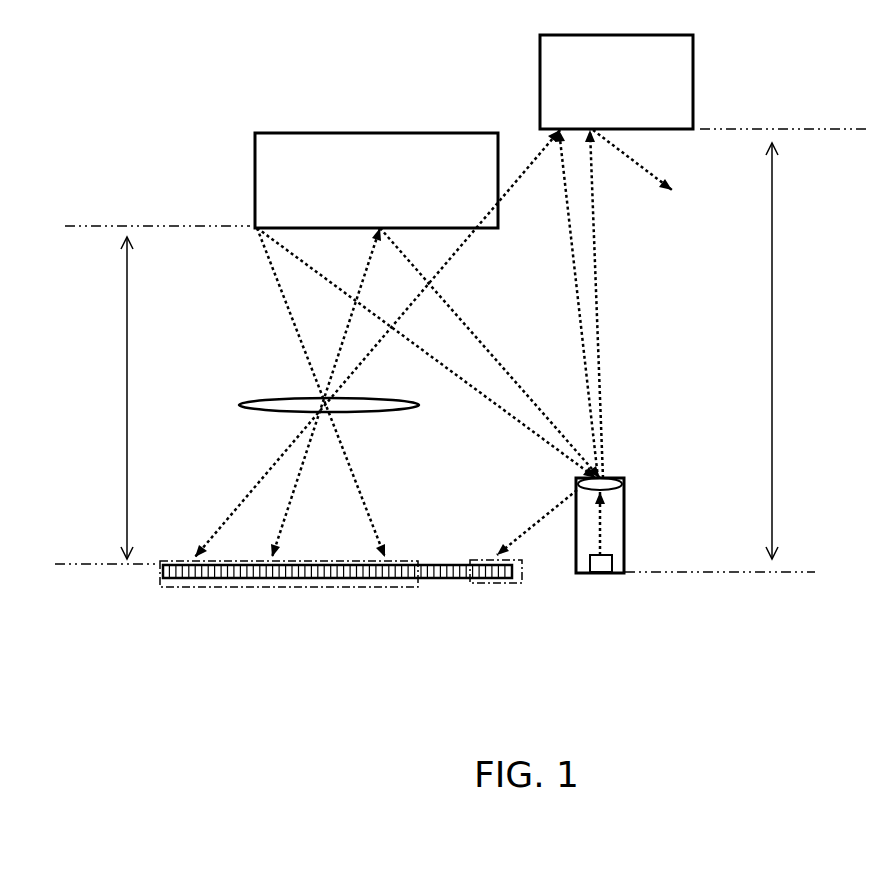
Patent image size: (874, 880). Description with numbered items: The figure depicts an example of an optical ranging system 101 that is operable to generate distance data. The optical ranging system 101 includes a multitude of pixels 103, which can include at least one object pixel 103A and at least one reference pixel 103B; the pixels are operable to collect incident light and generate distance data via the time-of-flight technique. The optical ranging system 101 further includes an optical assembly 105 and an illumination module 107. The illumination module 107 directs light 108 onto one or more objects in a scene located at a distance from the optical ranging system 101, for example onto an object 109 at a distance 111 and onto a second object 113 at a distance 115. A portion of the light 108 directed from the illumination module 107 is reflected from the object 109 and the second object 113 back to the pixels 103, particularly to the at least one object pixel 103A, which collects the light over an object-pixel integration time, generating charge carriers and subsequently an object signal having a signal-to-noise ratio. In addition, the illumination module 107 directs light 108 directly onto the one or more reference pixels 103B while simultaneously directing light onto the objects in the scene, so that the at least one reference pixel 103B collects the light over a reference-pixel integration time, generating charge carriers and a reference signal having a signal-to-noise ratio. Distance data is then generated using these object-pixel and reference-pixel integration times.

The optical ranging system 101 is at (132, 188).
The pixels 103 is at (163, 613).
The object pixel 103A is at (297, 588).
The reference pixel 103B is at (483, 587).
The optical assembly 105 is at (247, 402).
The illumination module 107 is at (638, 563).
The light 108 is at (606, 366).
The object 109 is at (376, 180).
The distance 111 is at (107, 398).
The second object 113 is at (616, 82).
The distance 115 is at (794, 351).